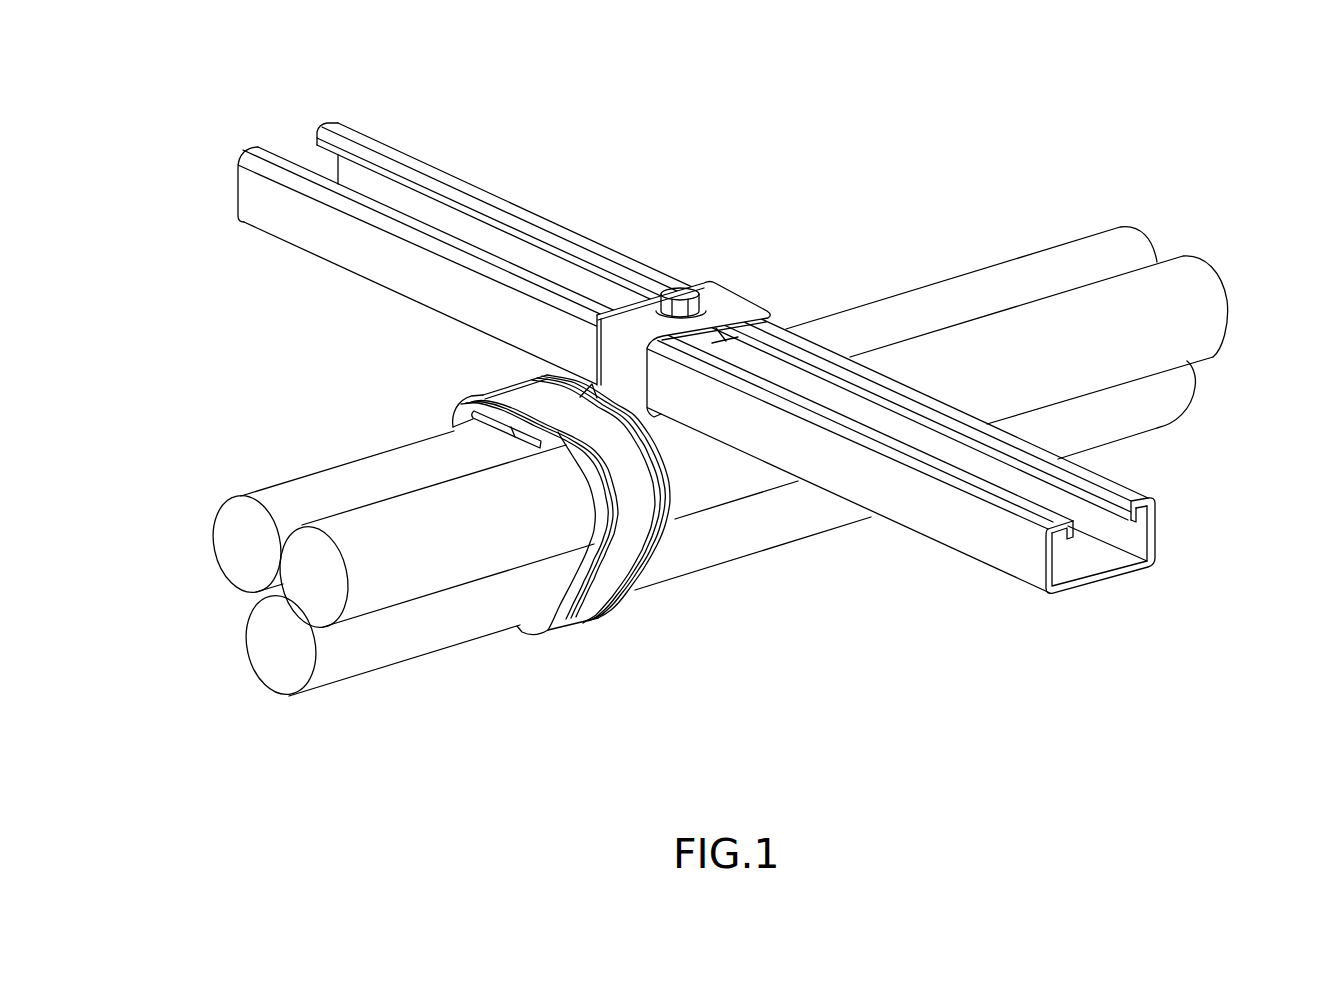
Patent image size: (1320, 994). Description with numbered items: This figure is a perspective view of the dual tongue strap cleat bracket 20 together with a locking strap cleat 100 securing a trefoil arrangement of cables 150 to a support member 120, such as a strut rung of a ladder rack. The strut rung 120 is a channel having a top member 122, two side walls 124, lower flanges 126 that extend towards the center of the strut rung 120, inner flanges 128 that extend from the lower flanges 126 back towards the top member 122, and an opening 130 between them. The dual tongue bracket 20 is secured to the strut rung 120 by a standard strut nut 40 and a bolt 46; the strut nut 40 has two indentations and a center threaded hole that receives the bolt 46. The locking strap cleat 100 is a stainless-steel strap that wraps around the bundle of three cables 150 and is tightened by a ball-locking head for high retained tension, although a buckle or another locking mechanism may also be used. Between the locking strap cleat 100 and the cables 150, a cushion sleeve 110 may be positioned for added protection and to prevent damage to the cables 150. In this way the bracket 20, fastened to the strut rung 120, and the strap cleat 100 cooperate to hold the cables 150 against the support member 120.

The dual tongue strap cleat bracket 20 is at (749, 207).
The strut nut 40 is at (773, 322).
The bolt 46 is at (680, 290).
The locking strap cleat 100 is at (540, 403).
The cushion sleeve 110 is at (455, 411).
The support member 120 is at (434, 166).
The top member 122 is at (1085, 565).
The side walls 124 is at (1137, 530).
The lower flanges 126 is at (1132, 493).
The inner flanges 128 is at (1115, 512).
The opening 130 is at (1077, 512).
The cables 150 is at (307, 485).